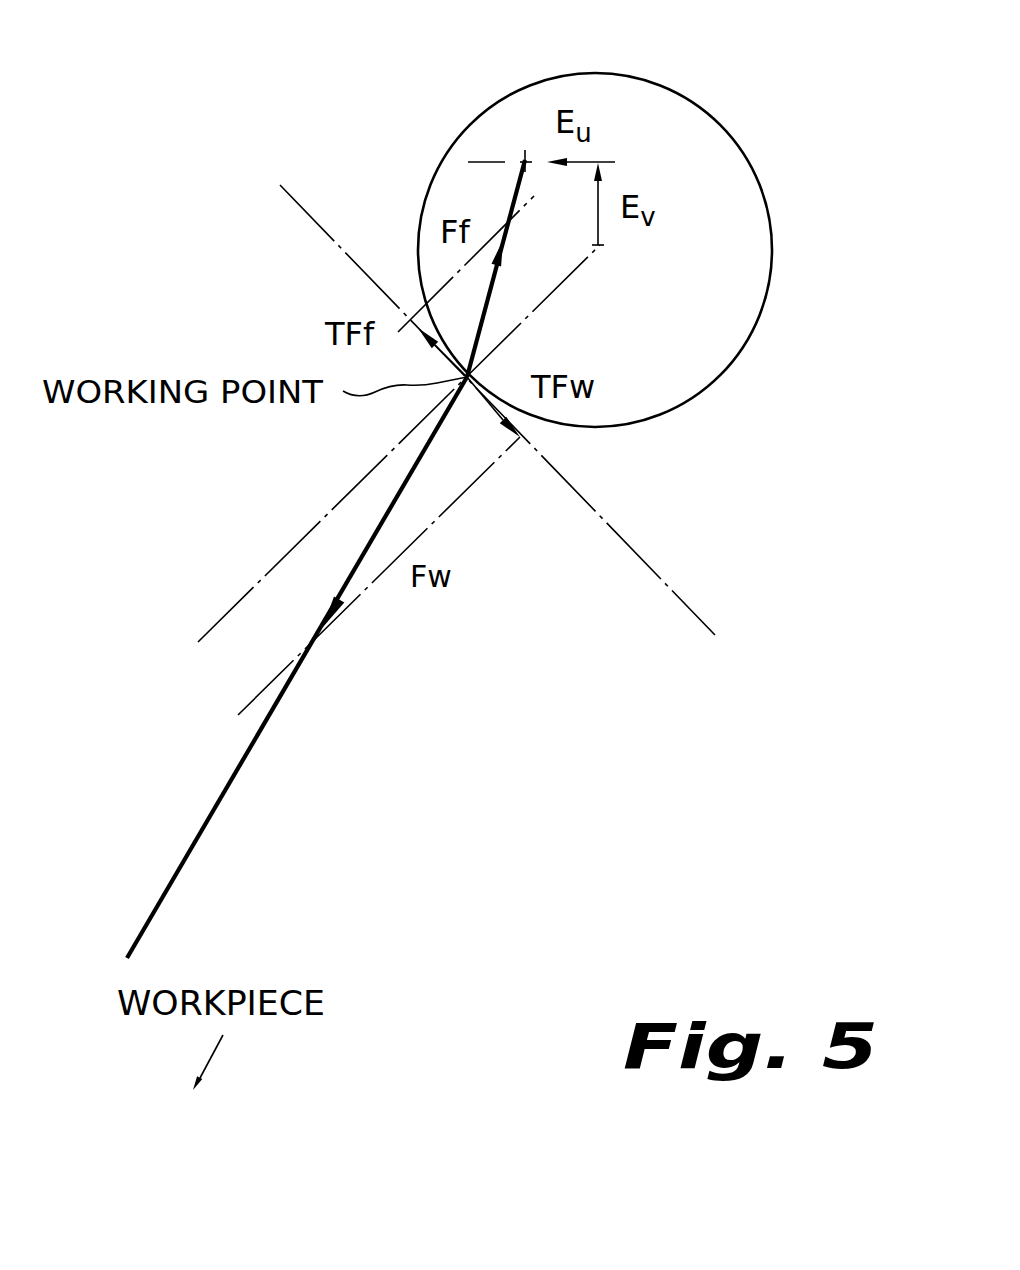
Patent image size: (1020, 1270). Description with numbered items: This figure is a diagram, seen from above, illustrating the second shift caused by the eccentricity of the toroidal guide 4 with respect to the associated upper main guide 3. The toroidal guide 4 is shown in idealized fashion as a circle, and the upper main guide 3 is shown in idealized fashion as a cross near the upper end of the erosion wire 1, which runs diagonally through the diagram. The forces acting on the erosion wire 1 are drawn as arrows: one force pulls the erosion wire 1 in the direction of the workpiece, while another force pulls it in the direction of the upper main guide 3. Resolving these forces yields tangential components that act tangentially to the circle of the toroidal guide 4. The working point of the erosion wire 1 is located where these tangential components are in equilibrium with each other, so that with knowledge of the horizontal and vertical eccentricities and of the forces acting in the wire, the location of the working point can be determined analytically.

The erosion wire 1 is at (181, 866).
The upper main guide 3 is at (525, 160).
The toroidal guide 4 is at (762, 113).